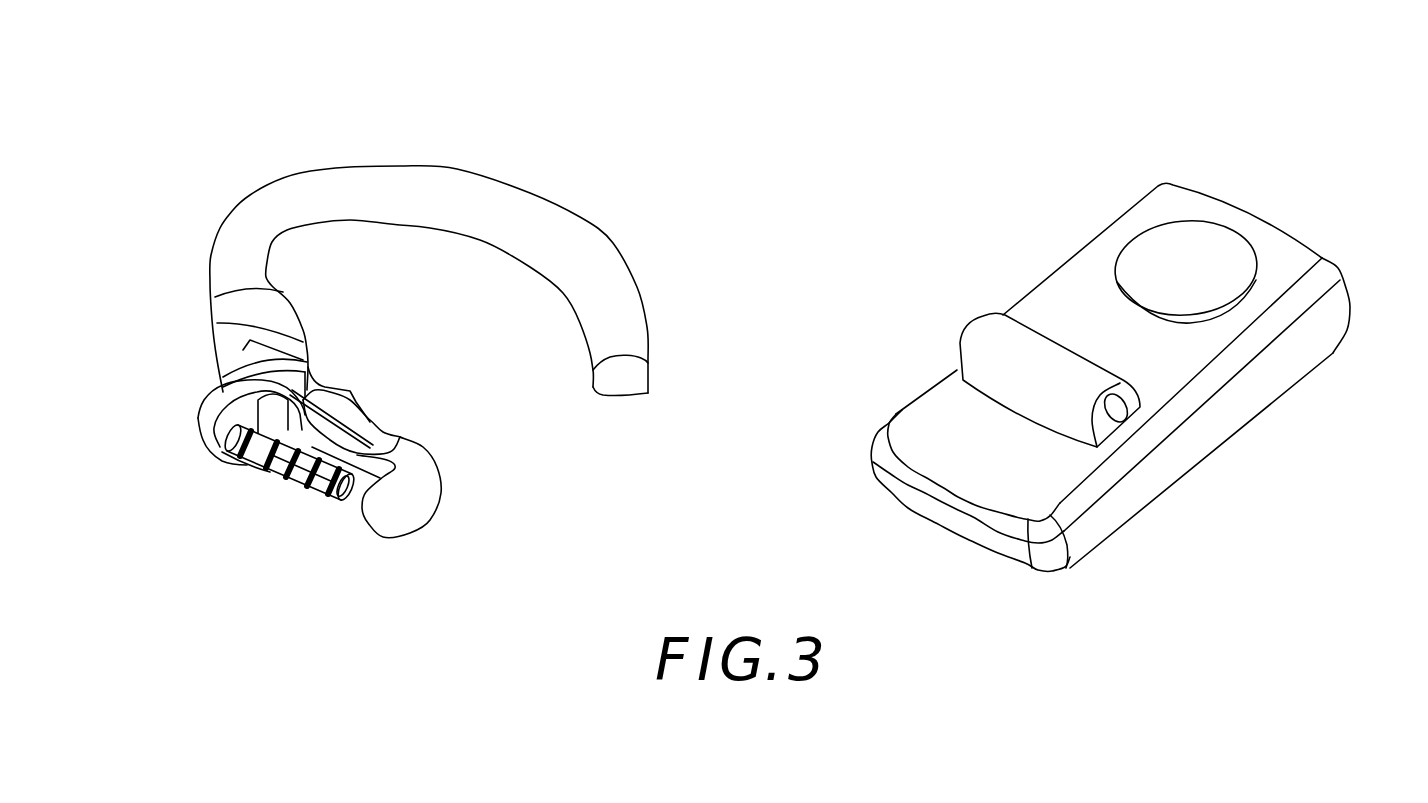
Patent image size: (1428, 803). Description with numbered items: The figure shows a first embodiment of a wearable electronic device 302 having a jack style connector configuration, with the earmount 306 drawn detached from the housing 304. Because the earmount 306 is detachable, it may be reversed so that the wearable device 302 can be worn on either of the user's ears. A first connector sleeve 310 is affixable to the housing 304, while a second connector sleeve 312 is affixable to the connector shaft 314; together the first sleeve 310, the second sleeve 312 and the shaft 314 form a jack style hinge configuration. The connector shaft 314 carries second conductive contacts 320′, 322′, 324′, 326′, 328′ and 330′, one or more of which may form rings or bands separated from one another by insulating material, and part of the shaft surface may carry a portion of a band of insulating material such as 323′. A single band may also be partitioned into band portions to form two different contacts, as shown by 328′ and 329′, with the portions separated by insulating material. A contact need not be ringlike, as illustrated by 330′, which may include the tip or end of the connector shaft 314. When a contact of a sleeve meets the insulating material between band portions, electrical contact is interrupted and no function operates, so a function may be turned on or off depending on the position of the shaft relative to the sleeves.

The wearable electronic device 302 is at (776, 314).
The housing 304 is at (1330, 357).
The earmount 306 is at (600, 237).
The first connector sleeve 310 is at (960, 341).
The second connector sleeve 312 is at (369, 425).
The connector shaft 314 is at (309, 368).
The second conductive contact 320′ is at (237, 457).
The second conductive contact 322′ is at (258, 428).
The band of insulating material 323′ is at (248, 462).
The second conductive contact 324′ is at (268, 473).
The second conductive contact 326′ is at (292, 480).
The second conductive contact 328′ is at (307, 495).
The conductive contact band portion 329′ is at (400, 462).
The second conductive contact 330′ is at (323, 497).